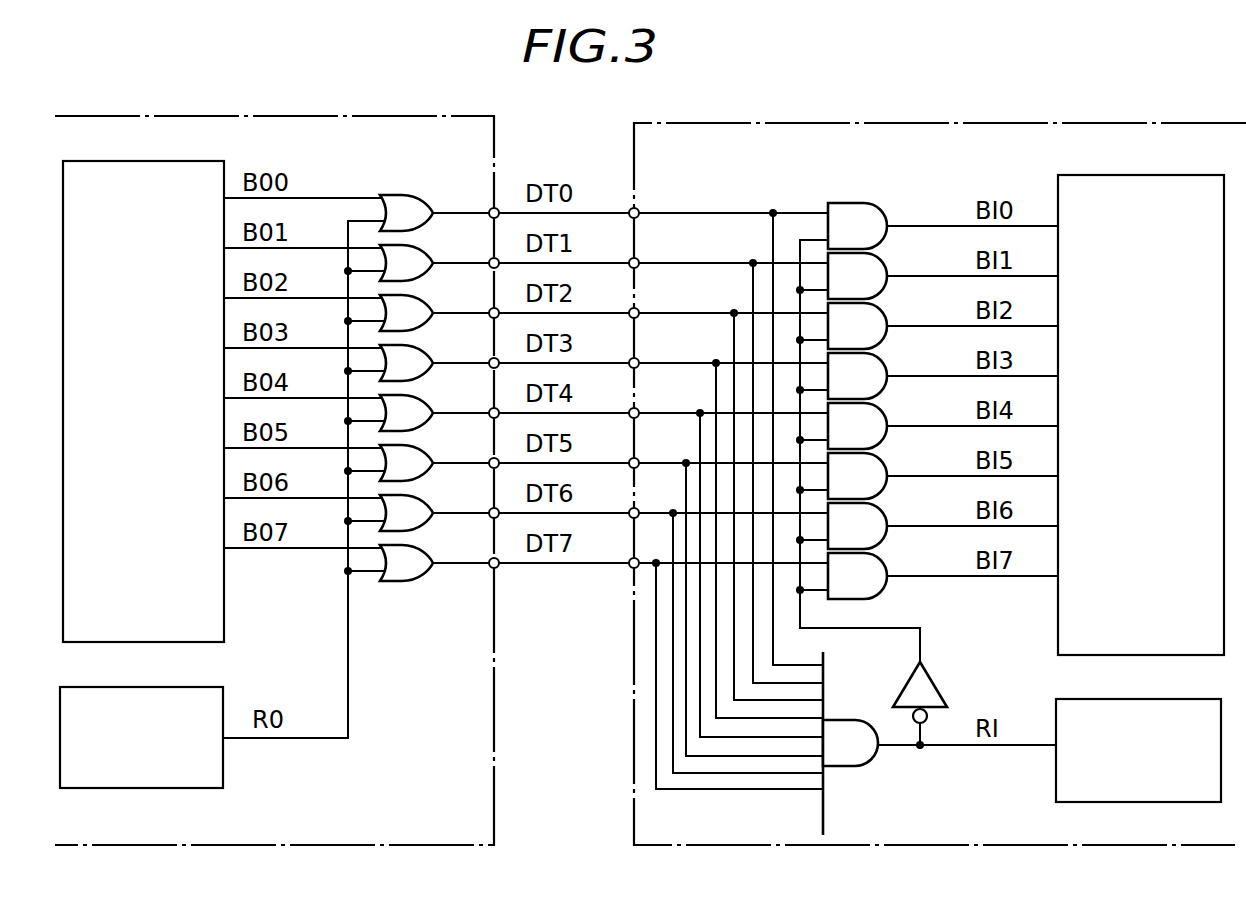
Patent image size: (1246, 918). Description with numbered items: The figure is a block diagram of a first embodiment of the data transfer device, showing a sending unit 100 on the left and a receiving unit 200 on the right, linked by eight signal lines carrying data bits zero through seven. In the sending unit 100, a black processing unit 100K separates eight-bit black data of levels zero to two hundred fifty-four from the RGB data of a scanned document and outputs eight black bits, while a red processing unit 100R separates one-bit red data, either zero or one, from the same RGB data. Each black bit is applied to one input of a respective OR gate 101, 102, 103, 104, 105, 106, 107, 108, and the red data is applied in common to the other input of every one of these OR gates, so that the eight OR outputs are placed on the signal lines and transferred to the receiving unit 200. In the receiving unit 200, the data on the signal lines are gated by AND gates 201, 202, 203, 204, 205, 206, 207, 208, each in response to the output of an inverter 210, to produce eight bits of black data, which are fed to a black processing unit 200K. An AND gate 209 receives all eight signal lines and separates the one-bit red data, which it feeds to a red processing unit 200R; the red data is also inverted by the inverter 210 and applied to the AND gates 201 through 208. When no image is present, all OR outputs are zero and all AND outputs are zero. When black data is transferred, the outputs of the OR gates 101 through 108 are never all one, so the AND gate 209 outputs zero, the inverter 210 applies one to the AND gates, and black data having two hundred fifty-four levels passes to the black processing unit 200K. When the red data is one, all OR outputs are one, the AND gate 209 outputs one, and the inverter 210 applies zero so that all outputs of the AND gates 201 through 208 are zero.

The sending unit 100 is at (333, 845).
The receiving unit 200 is at (680, 845).
The black processing unit 100K is at (224, 607).
The red processing unit 100R is at (203, 788).
The black processing unit 200K is at (1082, 655).
The red processing unit 200R is at (1075, 802).
The OR gate 101 is at (426, 203).
The OR gate 102 is at (426, 253).
The OR gate 103 is at (426, 303).
The OR gate 104 is at (426, 353).
The OR gate 105 is at (426, 403).
The OR gate 106 is at (426, 453).
The OR gate 107 is at (426, 503).
The OR gate 108 is at (426, 553).
The AND gate 201 is at (883, 210).
The AND gate 202 is at (875, 254).
The AND gate 203 is at (875, 305).
The AND gate 204 is at (875, 355).
The AND gate 205 is at (875, 405).
The AND gate 206 is at (875, 455).
The AND gate 207 is at (875, 505).
The AND gate 208 is at (875, 555).
The AND gate 209 is at (875, 760).
The inverter 210 is at (936, 680).